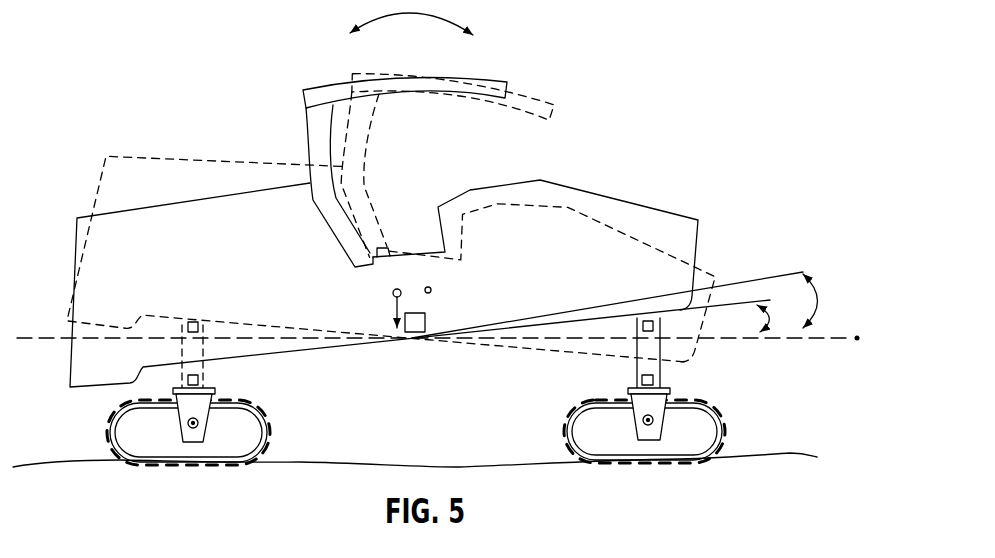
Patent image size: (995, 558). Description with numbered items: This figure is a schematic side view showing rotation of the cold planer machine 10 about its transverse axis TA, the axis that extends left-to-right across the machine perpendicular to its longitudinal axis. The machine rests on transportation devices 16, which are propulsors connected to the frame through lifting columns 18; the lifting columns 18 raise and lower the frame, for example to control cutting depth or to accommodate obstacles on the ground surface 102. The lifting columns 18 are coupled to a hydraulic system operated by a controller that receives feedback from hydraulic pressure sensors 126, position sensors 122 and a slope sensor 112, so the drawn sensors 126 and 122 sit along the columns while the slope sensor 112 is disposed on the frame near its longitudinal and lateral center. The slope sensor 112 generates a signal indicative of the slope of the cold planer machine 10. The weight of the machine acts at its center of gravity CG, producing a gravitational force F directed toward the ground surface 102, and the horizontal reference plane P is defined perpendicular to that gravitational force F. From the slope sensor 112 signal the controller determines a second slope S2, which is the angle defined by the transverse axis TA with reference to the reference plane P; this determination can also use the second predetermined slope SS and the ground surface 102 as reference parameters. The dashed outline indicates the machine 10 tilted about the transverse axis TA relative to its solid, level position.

The cold planer machine 10 is at (617, 155).
The transportation devices 16 is at (268, 442).
The lifting columns 18 is at (180, 362).
The ground surface 102 is at (797, 453).
The slope sensor 112 is at (427, 315).
The position sensors 122 is at (207, 380).
The hydraulic pressure sensors 126 is at (194, 321).
The center of gravity CG is at (404, 295).
The gravitational force F is at (390, 318).
The transverse axis TA is at (412, 340).
The second predetermined slope SS is at (818, 302).
The second slope S2 is at (768, 326).
The reference plane P is at (850, 340).